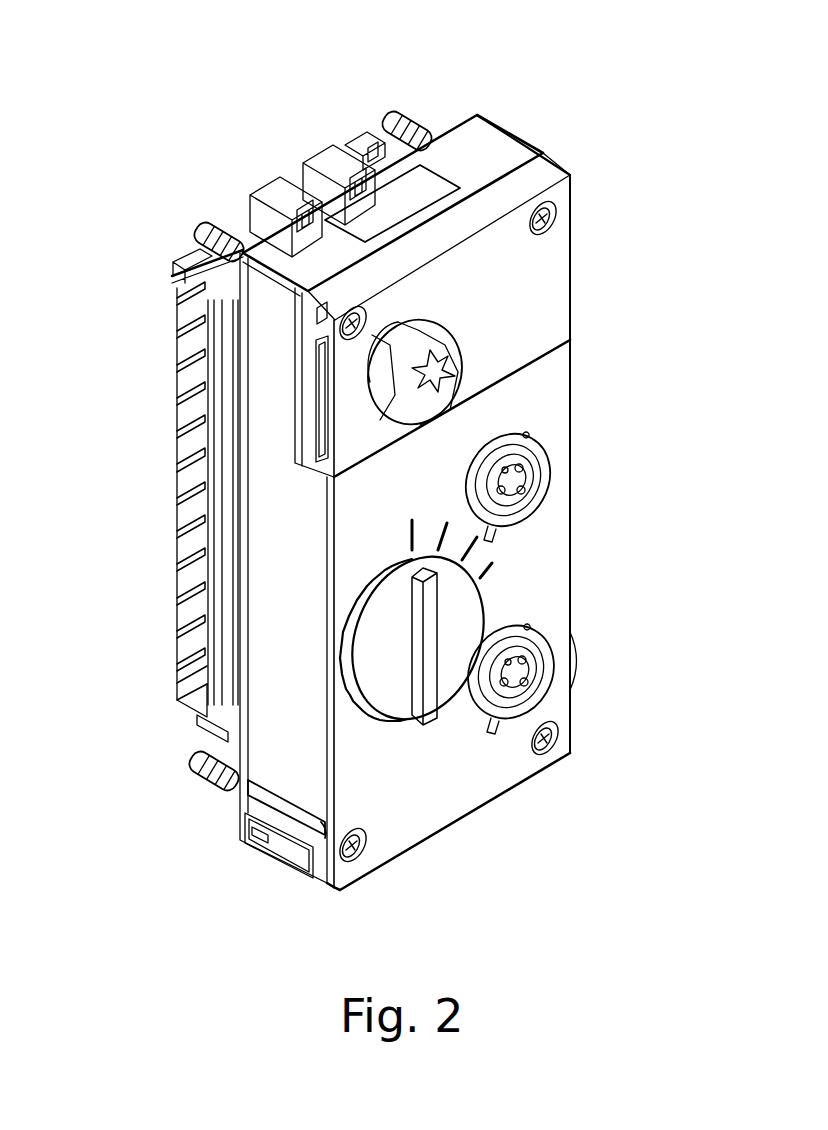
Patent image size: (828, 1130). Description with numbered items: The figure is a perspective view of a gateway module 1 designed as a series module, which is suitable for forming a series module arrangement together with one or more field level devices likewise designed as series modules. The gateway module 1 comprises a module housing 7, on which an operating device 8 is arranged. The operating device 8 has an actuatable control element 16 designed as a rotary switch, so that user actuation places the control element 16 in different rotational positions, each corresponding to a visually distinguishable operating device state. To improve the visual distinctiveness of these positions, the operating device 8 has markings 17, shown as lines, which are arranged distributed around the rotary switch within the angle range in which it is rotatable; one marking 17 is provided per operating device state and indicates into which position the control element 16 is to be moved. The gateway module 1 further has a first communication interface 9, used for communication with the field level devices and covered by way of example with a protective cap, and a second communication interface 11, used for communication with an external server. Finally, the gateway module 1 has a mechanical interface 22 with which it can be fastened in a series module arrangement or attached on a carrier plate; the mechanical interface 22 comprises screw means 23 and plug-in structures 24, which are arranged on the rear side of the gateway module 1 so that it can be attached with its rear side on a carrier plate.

The gateway module 1 is at (611, 103).
The module housing 7 is at (573, 410).
The operating device 8 is at (410, 748).
The first communication interface 9 is at (458, 348).
The second communication interface 11 is at (548, 488).
The control element 16 is at (385, 722).
The markings 17 is at (436, 496).
The mechanical interface 22 is at (386, 122).
The screw means 23 is at (208, 238).
The plug-in structures 24 is at (190, 352).